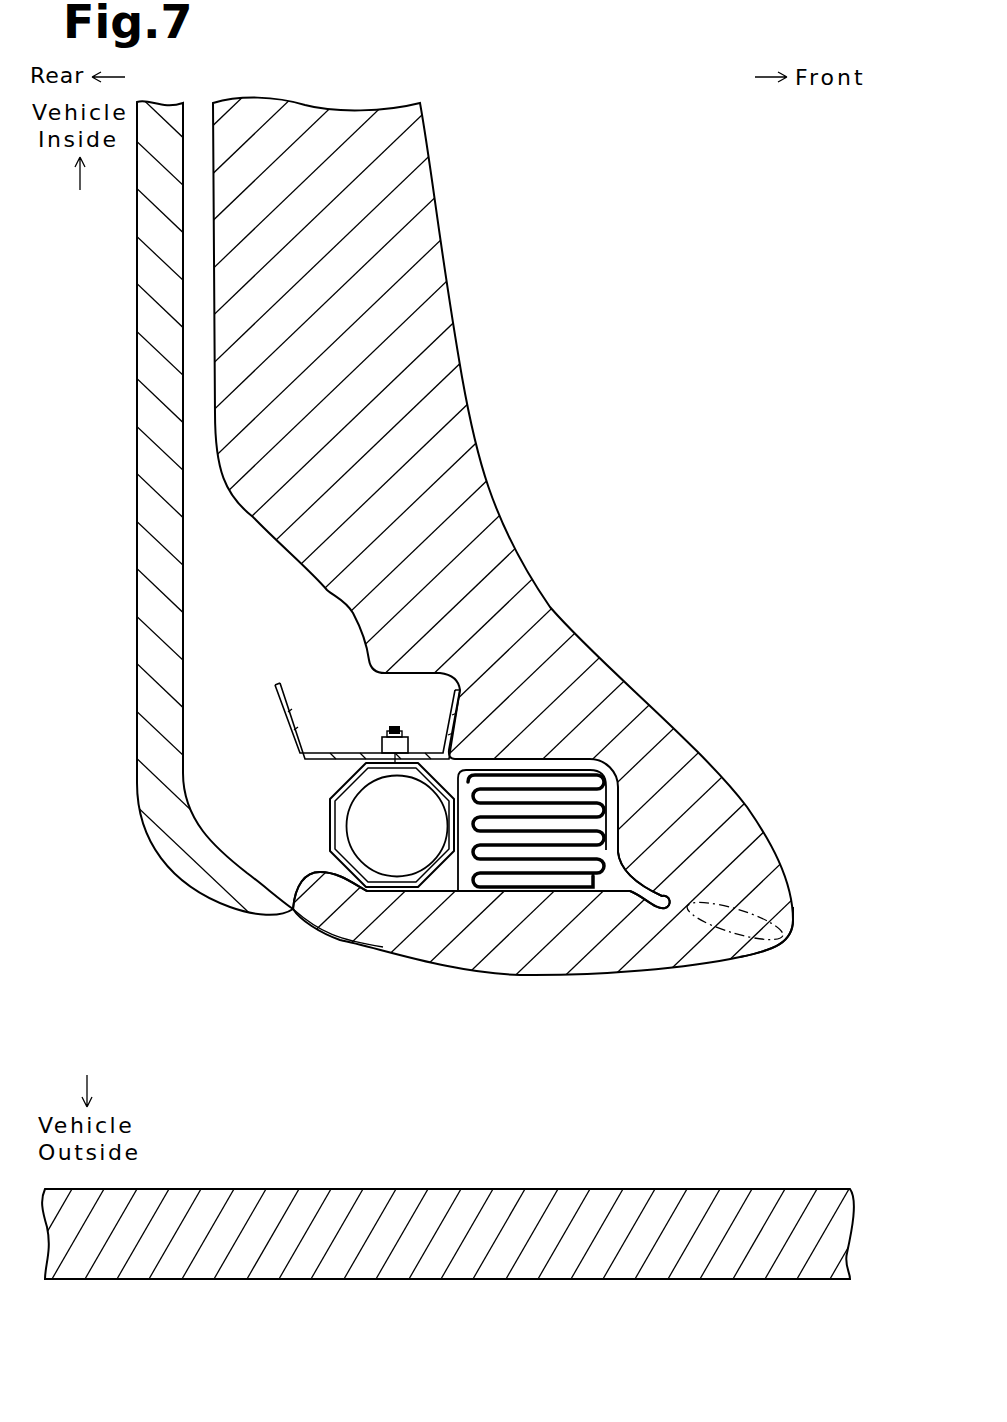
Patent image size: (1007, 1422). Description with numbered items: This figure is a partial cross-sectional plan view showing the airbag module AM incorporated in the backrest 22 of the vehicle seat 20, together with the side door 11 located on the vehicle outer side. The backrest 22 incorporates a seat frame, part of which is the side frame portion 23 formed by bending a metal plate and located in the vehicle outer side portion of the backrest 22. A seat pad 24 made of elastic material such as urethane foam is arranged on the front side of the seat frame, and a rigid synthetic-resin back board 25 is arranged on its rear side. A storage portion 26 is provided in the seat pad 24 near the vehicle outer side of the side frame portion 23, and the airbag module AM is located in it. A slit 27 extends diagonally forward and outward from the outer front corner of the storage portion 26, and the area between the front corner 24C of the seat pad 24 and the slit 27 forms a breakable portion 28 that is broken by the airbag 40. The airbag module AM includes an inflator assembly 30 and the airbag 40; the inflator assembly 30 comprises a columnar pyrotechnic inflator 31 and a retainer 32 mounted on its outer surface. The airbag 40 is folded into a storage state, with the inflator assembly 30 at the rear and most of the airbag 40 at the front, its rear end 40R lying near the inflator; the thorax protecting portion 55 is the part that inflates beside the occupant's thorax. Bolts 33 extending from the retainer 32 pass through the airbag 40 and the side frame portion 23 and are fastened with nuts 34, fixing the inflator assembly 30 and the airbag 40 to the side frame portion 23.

The side door 11 is at (541, 1188).
The vehicle seat 20 is at (481, 711).
The backrest 22 is at (481, 711).
The side frame portion 23 is at (283, 717).
The seat pad 24 is at (472, 417).
The front corner 24C is at (795, 937).
The back board 25 is at (137, 555).
The storage portion 26 is at (461, 890).
The slit 27 is at (657, 882).
The breakable portion 28 is at (727, 965).
The inflator assembly 30 is at (403, 988).
The inflator 31 is at (330, 936).
The retainer 32 is at (381, 865).
The bolts 33 is at (393, 726).
The nuts 34 is at (382, 746).
The airbag 40 is at (526, 807).
The rear end of the airbag 40R is at (330, 835).
The thorax protecting portion 55 is at (612, 800).
The airbag module AM is at (311, 825).